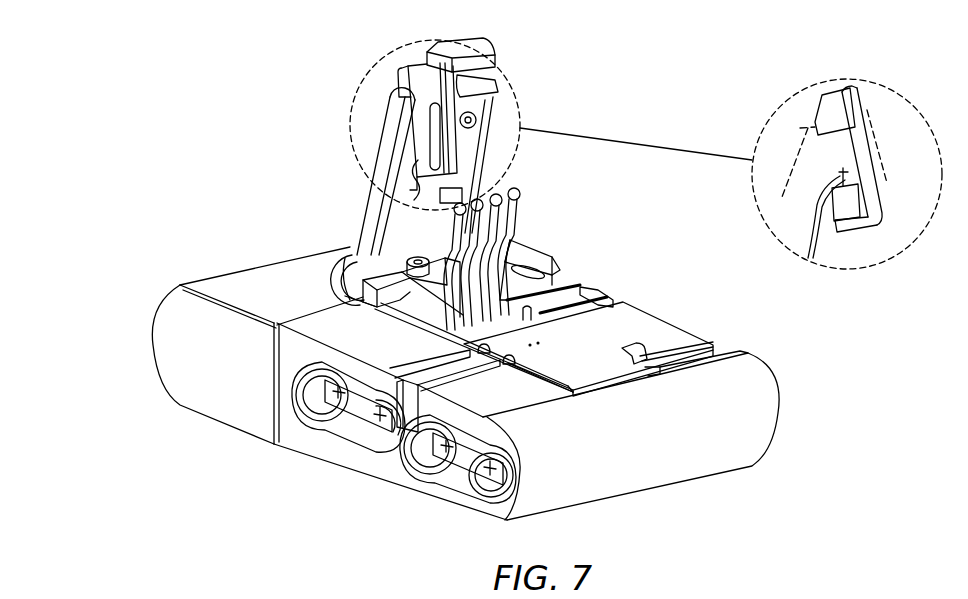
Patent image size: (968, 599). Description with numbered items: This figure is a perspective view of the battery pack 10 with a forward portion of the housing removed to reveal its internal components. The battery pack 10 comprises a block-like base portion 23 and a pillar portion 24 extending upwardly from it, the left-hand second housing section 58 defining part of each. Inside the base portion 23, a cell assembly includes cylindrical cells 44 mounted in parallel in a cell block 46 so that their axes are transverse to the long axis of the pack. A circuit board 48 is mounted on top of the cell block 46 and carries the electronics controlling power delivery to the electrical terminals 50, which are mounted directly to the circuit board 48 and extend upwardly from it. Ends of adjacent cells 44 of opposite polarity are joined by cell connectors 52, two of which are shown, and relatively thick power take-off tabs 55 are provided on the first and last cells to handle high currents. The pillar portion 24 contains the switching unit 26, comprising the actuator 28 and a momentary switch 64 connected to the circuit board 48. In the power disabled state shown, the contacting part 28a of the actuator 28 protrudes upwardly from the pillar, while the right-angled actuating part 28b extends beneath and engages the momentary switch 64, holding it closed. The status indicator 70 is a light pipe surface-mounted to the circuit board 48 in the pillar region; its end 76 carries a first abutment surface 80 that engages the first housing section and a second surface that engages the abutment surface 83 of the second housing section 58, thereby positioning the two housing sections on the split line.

The battery pack 10 is at (193, 76).
The base portion 23 is at (158, 290).
The pillar portion 24 is at (336, 168).
The switching unit 26 is at (487, 135).
The actuator 28 is at (402, 82).
The contacting part 28a is at (426, 78).
The actuating part 28b is at (470, 188).
The cells 44 is at (322, 425).
The cell block 46 is at (720, 460).
The circuit board 48 is at (588, 347).
The electrical terminals 50 is at (511, 230).
The cell connectors 52 is at (358, 393).
The power take-off tabs 55 is at (710, 353).
The second housing section 58 is at (212, 403).
The momentary switch 64 is at (417, 175).
The status indicator 70 is at (399, 302).
The end of the light pipe 76 is at (347, 295).
The first abutment surface 80 is at (376, 297).
The abutment surface of the second housing section 83 is at (357, 275).